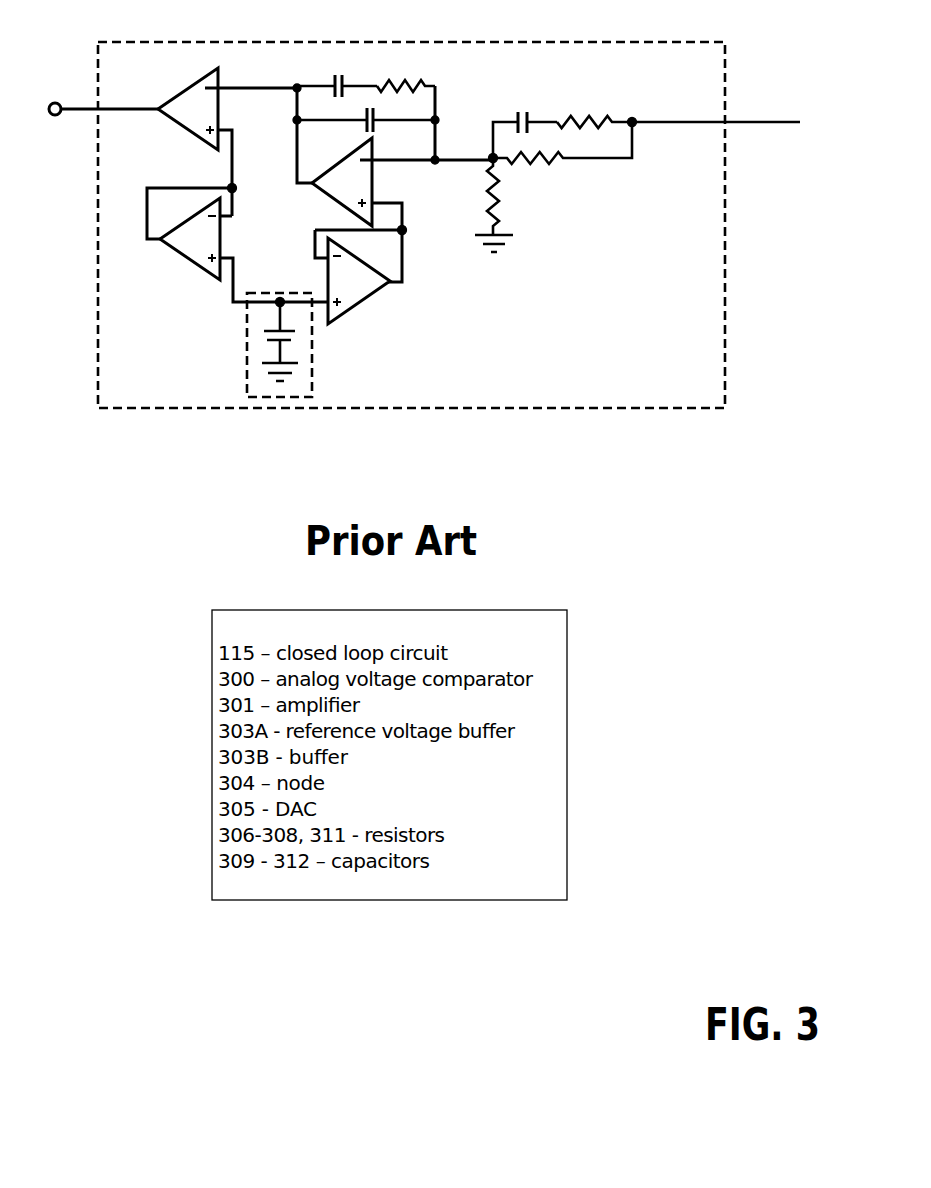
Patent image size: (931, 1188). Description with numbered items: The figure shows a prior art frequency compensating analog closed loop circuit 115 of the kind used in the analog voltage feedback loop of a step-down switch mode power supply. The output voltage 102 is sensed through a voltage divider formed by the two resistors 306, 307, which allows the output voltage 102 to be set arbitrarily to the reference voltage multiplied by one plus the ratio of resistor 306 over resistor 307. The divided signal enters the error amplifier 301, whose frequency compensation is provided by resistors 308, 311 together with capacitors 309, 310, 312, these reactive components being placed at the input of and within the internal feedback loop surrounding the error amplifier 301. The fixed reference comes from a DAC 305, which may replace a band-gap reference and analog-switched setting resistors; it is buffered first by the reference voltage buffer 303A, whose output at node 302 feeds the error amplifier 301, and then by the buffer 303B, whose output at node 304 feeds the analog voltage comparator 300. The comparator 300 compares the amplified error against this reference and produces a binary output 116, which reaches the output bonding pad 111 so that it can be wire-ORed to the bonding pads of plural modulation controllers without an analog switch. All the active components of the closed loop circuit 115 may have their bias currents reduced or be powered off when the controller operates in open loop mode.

The closed loop circuit 115 is at (107, 43).
The comparator output 116 is at (122, 102).
The output bonding pad 111 is at (59, 116).
The output voltage 102 is at (782, 117).
The analog voltage comparator 300 is at (227, 142).
The error amplifier 301 is at (373, 210).
The node 302 is at (405, 248).
The reference voltage buffer 303A is at (335, 277).
The buffer 303B is at (213, 245).
The node 304 is at (235, 180).
The DAC 305 is at (308, 345).
The resistor 306 is at (545, 165).
The resistor 307 is at (500, 188).
The resistor 308 is at (583, 120).
The capacitor 309 is at (515, 117).
The capacitor 310 is at (375, 129).
The resistor 311 is at (385, 80).
The capacitor 312 is at (343, 97).